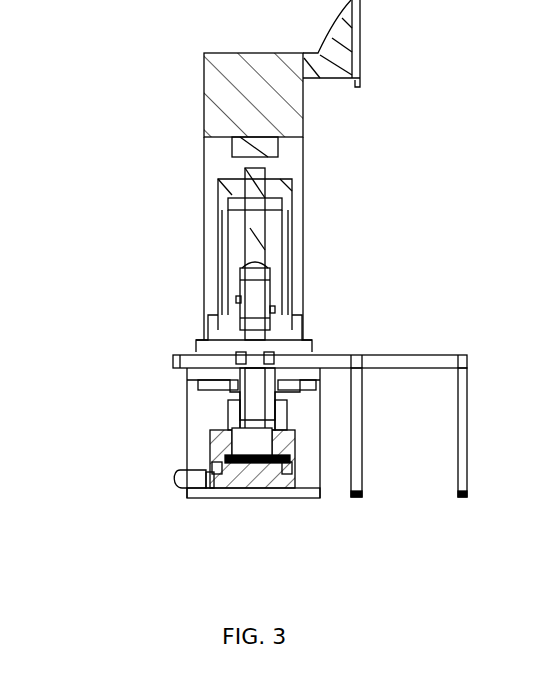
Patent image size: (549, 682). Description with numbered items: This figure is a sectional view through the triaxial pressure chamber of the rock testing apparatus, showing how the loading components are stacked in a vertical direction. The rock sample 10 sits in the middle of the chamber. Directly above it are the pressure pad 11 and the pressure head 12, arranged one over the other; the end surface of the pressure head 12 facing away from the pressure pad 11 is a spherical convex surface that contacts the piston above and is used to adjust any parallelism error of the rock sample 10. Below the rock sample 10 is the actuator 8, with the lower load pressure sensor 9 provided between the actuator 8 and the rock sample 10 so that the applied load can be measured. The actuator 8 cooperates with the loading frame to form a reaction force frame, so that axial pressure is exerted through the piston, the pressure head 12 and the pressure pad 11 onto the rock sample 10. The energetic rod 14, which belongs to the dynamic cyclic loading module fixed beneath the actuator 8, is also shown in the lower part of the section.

The actuator 8 is at (247, 393).
The lower load pressure sensor 9 is at (240, 330).
The rock sample 10 is at (263, 300).
The pressure pad 11 is at (252, 290).
The pressure head 12 is at (247, 265).
The energetic rod 14 is at (258, 492).